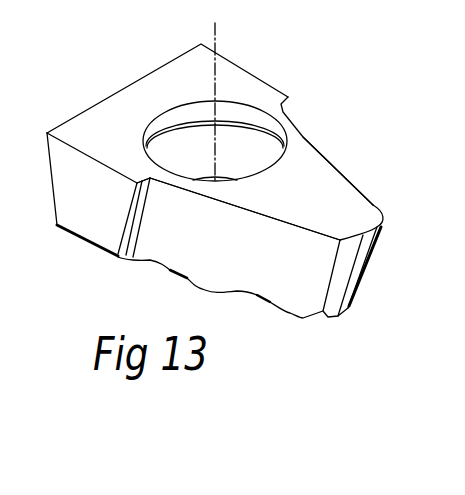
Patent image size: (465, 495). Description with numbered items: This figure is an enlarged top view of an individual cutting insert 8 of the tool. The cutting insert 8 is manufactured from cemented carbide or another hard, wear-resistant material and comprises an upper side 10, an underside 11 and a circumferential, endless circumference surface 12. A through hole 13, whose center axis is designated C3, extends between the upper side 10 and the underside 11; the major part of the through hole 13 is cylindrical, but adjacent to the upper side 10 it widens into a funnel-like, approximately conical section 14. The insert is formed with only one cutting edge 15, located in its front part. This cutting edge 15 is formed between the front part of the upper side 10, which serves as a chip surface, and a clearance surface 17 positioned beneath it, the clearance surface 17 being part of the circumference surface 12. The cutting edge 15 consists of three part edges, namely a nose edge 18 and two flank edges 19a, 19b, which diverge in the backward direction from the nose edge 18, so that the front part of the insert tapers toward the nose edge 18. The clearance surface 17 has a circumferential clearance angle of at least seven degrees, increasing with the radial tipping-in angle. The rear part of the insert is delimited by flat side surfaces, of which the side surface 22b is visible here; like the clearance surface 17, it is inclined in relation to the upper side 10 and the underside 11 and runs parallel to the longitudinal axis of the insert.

The cutting insert 8 is at (316, 342).
The upper side 10 is at (160, 98).
The underside 11 is at (264, 312).
The circumference surface 12 is at (76, 236).
The through hole 13 is at (262, 104).
The conical section 14 is at (153, 134).
The cutting edge 15 is at (384, 198).
The clearance surface 17 is at (233, 258).
The nose edge 18 is at (377, 208).
The flank edge 19a is at (346, 181).
The flank edge 19b is at (301, 221).
The side surface 22b is at (72, 203).
The center axis C3 is at (217, 46).